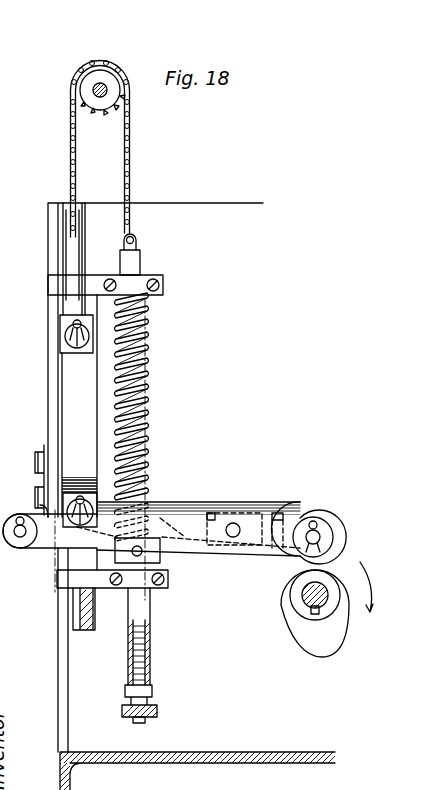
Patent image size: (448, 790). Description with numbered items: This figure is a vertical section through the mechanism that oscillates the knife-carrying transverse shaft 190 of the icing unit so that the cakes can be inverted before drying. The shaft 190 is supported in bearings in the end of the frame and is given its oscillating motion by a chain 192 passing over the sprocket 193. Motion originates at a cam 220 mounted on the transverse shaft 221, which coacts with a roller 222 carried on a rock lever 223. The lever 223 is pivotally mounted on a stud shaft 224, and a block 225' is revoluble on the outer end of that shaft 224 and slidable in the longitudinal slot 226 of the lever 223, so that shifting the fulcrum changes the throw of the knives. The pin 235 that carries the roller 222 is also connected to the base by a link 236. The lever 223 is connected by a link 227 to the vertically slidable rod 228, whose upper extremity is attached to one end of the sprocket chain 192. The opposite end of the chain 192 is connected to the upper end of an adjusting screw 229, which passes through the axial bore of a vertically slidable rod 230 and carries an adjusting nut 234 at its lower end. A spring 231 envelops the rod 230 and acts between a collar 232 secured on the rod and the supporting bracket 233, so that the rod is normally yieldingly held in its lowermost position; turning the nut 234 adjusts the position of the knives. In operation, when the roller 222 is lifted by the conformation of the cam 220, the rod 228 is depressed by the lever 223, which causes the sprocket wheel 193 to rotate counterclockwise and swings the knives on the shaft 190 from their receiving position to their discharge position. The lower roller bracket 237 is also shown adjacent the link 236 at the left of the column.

The sprocket 193 is at (83, 82).
The transverse shaft 190 is at (93, 97).
The chain 192 is at (71, 150).
The vertically slidable rod 228 is at (72, 238).
The adjusting screw 229 is at (137, 241).
The vertically slidable rod 230 is at (136, 263).
The supporting bracket 233 is at (165, 286).
The spring 231 is at (148, 373).
The link 227 is at (68, 396).
The roller bracket 237 is at (19, 518).
The link 236 is at (66, 541).
The rock lever 223 is at (164, 513).
The block 225' is at (245, 509).
The stud shaft 224 is at (238, 527).
The roller 222 is at (341, 521).
The pin 235 is at (323, 543).
The cam 220 is at (335, 640).
The transverse shaft 221 is at (335, 591).
The longitudinal slot 226 is at (208, 556).
The collar 232 is at (115, 557).
The adjusting nut 234 is at (153, 700).